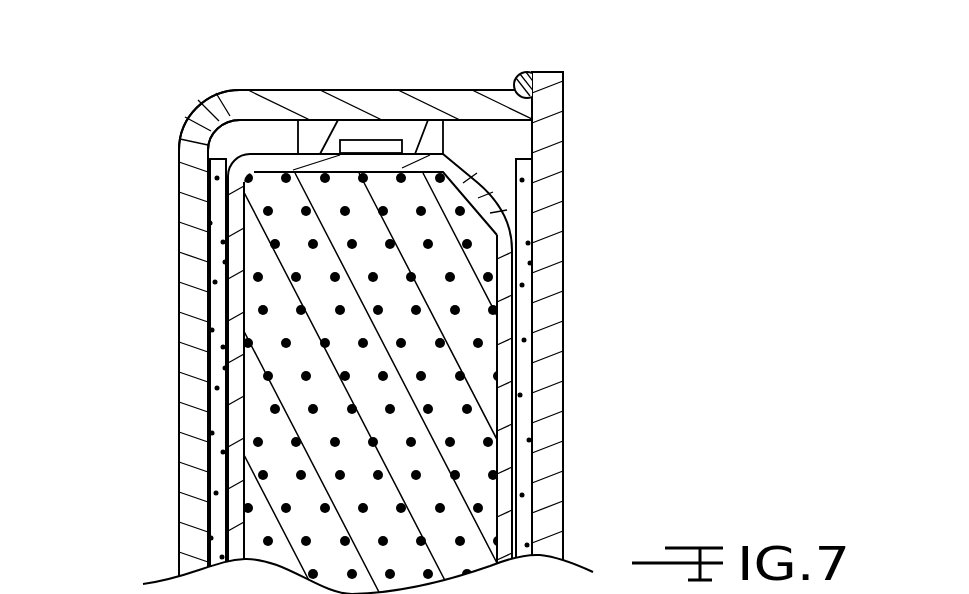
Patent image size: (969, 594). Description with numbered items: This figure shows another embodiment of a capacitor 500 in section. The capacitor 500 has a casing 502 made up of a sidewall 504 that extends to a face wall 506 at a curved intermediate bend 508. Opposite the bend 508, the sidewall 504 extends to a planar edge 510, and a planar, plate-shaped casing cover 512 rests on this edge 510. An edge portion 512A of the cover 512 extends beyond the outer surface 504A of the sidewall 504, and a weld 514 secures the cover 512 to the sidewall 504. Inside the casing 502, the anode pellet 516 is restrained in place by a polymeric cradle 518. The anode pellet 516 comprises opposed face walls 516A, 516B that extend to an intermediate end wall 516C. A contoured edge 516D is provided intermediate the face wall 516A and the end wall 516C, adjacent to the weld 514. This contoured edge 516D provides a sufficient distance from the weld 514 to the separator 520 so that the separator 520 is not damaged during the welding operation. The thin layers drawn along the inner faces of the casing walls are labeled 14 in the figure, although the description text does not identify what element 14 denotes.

The capacitor 500 is at (712, 181).
The casing 502 is at (166, 229).
The sidewall 504 is at (338, 90).
The outer surface of the sidewall 504A is at (276, 78).
The face wall 506 is at (180, 370).
The curved intermediate bend 508 is at (190, 123).
The planar edge 510 is at (563, 102).
The casing cover 512 is at (550, 253).
The edge portion of the cover 512A is at (565, 72).
The weld 514 is at (521, 72).
The anode pellet 516 is at (473, 485).
The face wall 516A is at (503, 412).
The face wall 516B is at (237, 472).
The intermediate end wall 516C is at (277, 173).
The contoured edge 516D is at (475, 183).
The polymeric cradle 518 is at (412, 132).
The separator 520 is at (508, 278).
The current collector plate 14 is at (212, 309).